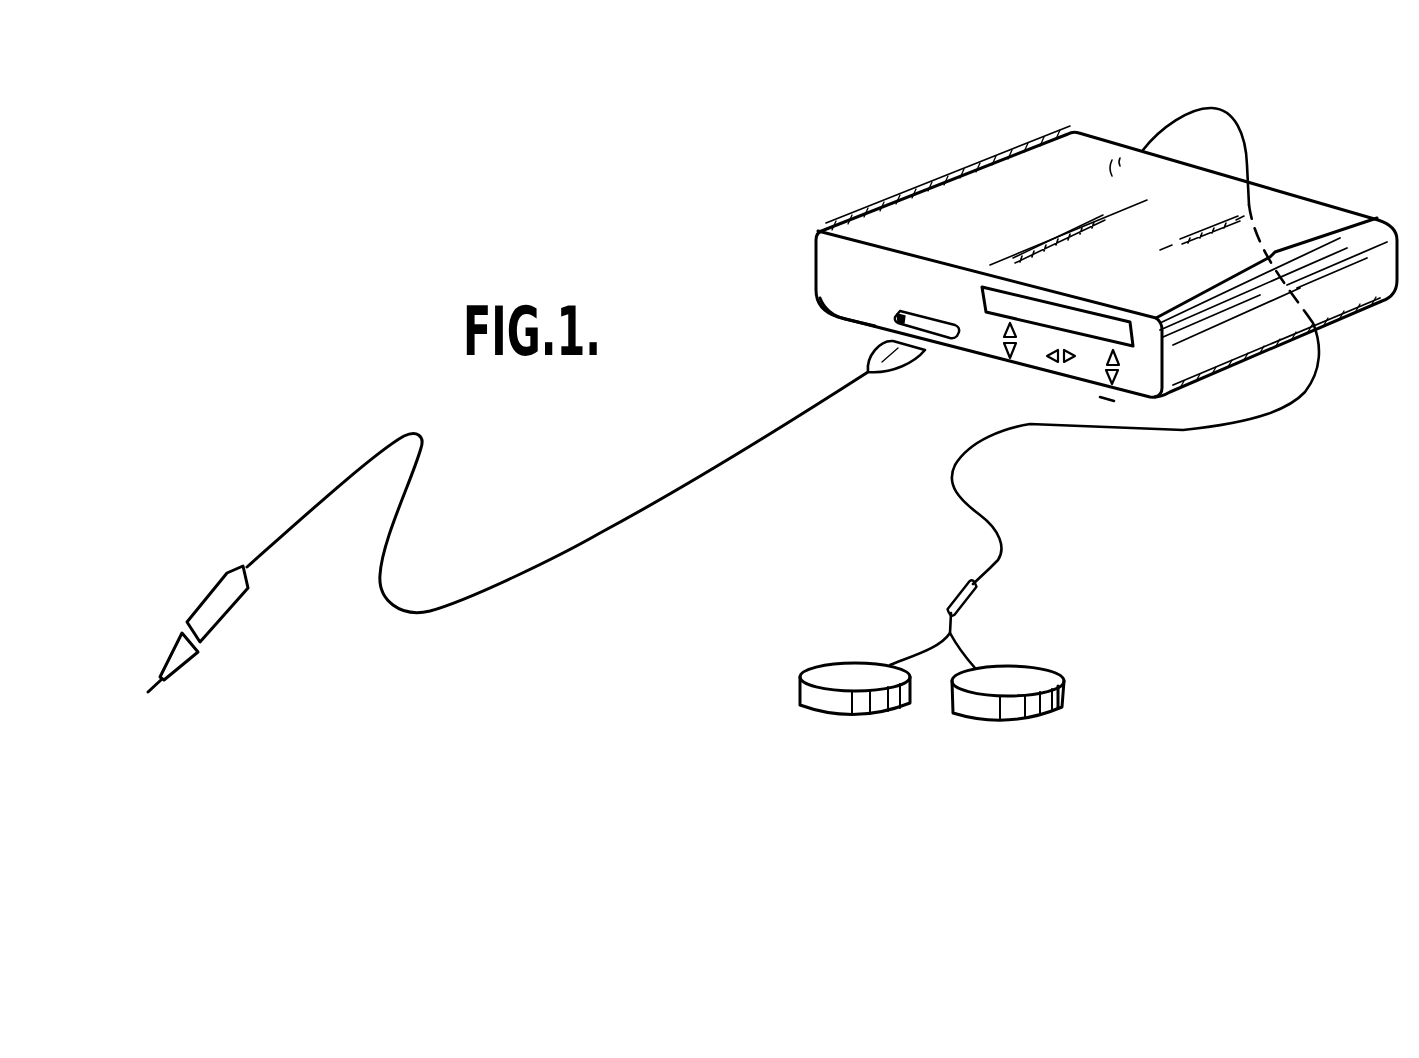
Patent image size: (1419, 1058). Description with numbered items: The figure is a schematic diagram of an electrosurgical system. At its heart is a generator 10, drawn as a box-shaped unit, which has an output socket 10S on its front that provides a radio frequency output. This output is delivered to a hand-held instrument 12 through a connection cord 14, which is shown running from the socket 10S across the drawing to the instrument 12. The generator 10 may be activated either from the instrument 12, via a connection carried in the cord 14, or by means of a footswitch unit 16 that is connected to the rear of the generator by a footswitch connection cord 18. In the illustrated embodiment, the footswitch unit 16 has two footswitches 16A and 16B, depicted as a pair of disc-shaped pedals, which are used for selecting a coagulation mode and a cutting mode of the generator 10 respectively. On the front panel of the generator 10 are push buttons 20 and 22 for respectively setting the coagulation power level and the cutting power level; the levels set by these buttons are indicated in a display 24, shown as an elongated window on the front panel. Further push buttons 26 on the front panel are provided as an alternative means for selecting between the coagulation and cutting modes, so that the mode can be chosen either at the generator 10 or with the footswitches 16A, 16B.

The generator 10 is at (1073, 317).
The output socket 10S is at (870, 326).
The instrument 12 is at (165, 613).
The connection cord 14 is at (607, 527).
The footswitch unit 16 is at (916, 600).
The footswitch 16A is at (805, 711).
The footswitch 16B is at (1068, 692).
The footswitch connection cord 18 is at (1170, 431).
The push button 20 is at (998, 345).
The push button 22 is at (1108, 406).
The display 24 is at (1085, 320).
The push buttons 26 is at (1062, 362).